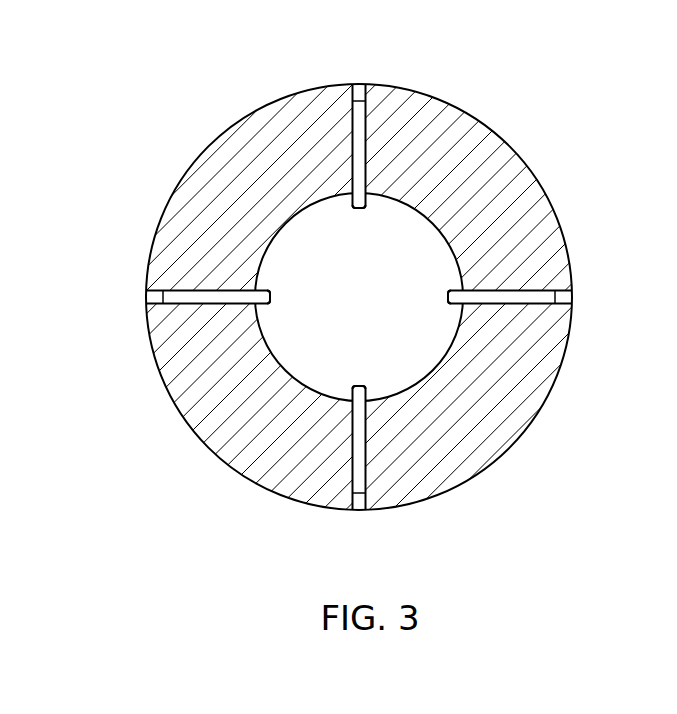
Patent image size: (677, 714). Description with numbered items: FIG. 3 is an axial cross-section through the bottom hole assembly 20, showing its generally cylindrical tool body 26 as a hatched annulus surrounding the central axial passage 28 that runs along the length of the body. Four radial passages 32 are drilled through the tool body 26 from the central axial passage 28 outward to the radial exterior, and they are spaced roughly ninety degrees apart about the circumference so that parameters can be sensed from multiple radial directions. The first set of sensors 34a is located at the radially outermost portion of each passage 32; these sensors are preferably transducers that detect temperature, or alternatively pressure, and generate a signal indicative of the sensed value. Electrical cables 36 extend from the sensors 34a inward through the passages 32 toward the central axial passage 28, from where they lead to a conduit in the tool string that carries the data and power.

The bottom hole assembly 20 is at (494, 86).
The tool body 26 is at (215, 167).
The central axial passage 28 is at (372, 304).
The radial passages 32 is at (353, 132).
The first set of sensors 34a is at (359, 93).
The electrical cables 36 is at (270, 296).